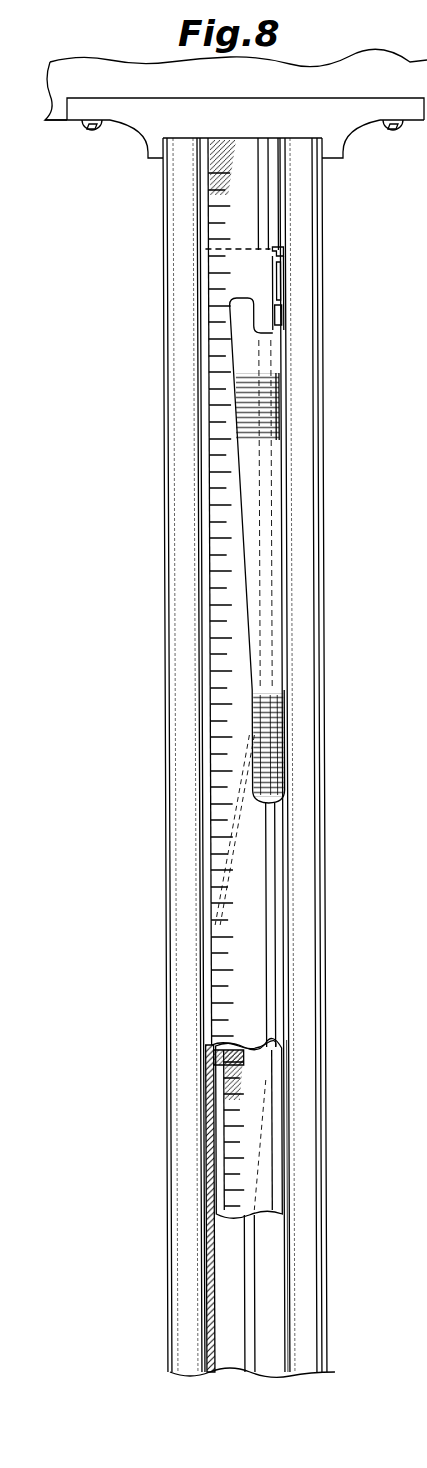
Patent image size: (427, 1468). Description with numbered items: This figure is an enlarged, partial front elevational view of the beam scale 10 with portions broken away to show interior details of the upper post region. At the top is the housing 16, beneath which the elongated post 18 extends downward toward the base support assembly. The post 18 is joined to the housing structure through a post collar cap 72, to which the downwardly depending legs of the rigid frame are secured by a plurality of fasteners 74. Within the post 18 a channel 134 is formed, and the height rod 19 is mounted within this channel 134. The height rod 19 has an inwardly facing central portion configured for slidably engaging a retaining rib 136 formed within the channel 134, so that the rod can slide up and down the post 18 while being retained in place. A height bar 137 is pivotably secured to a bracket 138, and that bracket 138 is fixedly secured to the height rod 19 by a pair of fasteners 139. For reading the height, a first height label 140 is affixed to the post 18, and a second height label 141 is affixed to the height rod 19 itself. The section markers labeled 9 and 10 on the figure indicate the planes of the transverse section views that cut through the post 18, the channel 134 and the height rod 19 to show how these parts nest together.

The housing 16 is at (99, 48).
The elongated post 18 is at (160, 572).
The height rod 19 is at (288, 1145).
The post collar cap 72 is at (353, 128).
The fasteners 74 is at (95, 133).
The channel 134 is at (208, 1262).
The retaining rib 136 is at (240, 1350).
The height bar 137 is at (278, 533).
The bracket 138 is at (283, 246).
The fasteners 139 is at (284, 310).
The first height label 140 is at (230, 818).
The second height label 141 is at (255, 1100).
The section line 9- 9 is at (360, 828).
The beam scale 10 is at (152, 982).